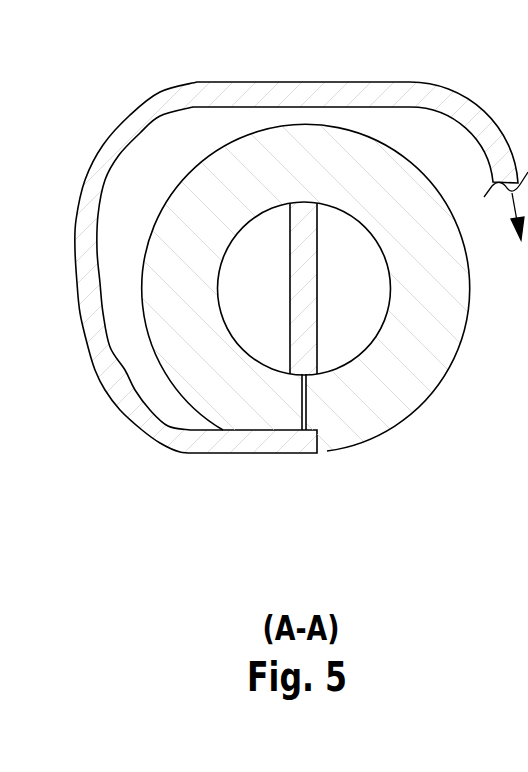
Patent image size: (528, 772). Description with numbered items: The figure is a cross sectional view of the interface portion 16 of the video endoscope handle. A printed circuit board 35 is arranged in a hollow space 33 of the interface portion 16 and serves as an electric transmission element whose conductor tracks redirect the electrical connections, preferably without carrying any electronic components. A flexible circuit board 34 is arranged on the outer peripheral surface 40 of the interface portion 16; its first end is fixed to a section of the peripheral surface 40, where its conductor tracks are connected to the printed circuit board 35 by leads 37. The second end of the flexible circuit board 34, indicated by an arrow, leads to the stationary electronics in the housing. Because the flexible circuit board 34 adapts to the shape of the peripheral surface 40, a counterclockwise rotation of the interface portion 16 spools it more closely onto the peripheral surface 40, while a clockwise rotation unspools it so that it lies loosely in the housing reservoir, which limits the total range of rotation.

The interface portion 16 is at (423, 362).
The hollow space 33 is at (273, 304).
The flexible circuit board 34 is at (306, 93).
The printed circuit board 35 is at (307, 298).
The leads 37 is at (308, 413).
The outer peripheral surface 40 is at (227, 140).